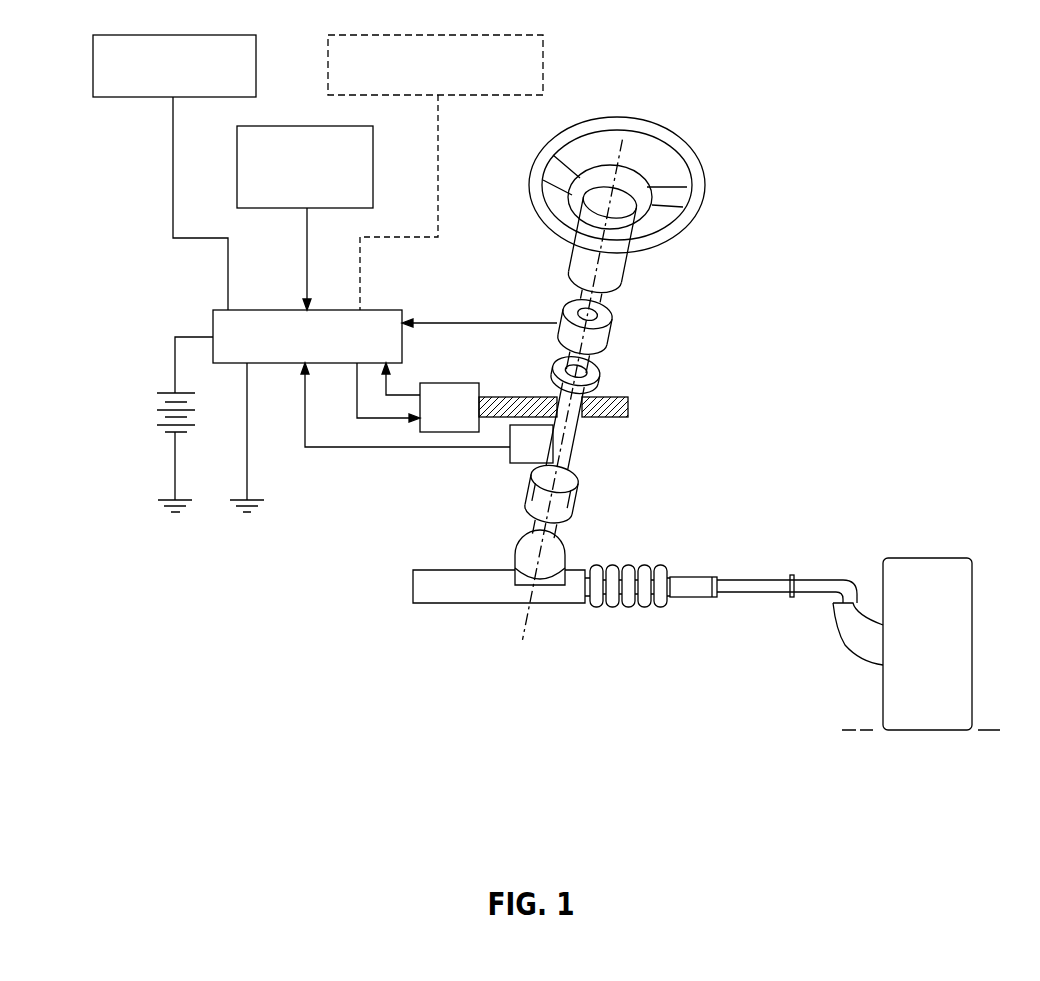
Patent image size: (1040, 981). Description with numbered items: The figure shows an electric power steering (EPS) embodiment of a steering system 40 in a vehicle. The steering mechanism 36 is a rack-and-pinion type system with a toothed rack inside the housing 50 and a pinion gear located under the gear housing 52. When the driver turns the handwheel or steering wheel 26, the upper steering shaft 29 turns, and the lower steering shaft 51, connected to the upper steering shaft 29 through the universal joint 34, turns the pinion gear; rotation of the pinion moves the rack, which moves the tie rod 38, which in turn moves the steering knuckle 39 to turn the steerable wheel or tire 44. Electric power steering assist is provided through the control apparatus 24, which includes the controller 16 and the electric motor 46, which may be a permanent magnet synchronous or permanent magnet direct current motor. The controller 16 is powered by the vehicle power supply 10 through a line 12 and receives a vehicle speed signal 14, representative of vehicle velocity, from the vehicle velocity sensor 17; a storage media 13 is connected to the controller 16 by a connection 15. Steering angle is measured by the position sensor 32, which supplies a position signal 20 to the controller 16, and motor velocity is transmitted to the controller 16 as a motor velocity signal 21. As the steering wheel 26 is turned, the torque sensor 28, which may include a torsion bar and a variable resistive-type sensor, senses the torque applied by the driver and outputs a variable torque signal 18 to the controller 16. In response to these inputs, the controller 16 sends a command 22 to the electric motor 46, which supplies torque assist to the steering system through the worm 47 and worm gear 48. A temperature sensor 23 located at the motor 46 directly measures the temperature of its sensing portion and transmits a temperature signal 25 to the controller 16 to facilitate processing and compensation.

The vehicle power supply 10 is at (165, 415).
The line 12 is at (190, 337).
The storage media 13 is at (118, 98).
The vehicle speed signal 14 is at (303, 220).
The storage media connection line 15 is at (172, 155).
The controller 16 is at (280, 310).
The vehicle velocity sensor 17 is at (306, 125).
The torque signal 18 is at (488, 323).
The position signal 20 is at (410, 447).
The motor velocity signal 21 is at (410, 395).
The command 22 is at (372, 420).
The temperature sensor 23 is at (547, 77).
The control apparatus 24 is at (780, 310).
The temperature signal 25 is at (441, 150).
The steering wheel 26 is at (663, 140).
The torque sensor 28 is at (607, 327).
The upper steering shaft 29 is at (578, 292).
The position sensor 32 is at (505, 458).
The universal joint 34 is at (580, 489).
The steering mechanism 36 is at (650, 560).
The tie rod 38 is at (748, 598).
The steering knuckle 39 is at (857, 632).
The steering system 40 is at (850, 396).
The steerable wheel 44 is at (918, 575).
The electric motor 46 is at (458, 383).
The worm 47 is at (630, 410).
The worm gear 48 is at (600, 372).
The housing 50 is at (448, 600).
The lower steering shaft 51 is at (562, 530).
The gear housing 52 is at (515, 553).